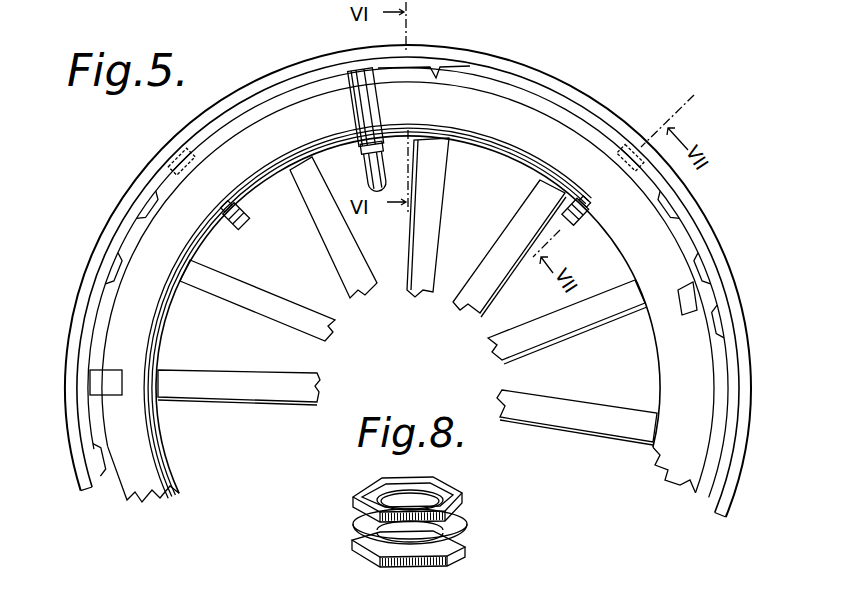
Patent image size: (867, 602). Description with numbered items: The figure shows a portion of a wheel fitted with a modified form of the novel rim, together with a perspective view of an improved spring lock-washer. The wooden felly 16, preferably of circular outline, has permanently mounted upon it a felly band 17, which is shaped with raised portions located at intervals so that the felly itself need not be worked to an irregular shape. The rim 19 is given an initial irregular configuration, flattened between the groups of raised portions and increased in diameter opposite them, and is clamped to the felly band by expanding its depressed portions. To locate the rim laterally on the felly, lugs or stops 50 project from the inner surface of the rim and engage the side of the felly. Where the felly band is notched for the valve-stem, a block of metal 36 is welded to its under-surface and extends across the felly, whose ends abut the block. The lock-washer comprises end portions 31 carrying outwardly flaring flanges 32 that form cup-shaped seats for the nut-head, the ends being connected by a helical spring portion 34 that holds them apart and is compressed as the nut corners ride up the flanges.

In FIG. 5, the rim 19 is at (70, 438).
In FIG. 5, the felly 16 is at (165, 369).
In FIG. 5, the felly band 17 is at (300, 305).
In FIG. 5, the block of metal 36 is at (348, 100).
In FIG. 5, the lugs or stops 50 is at (112, 390).
In FIG. 8, the end portions 31 is at (354, 507).
In FIG. 8, the flanges 32 is at (428, 486).
In FIG. 8, the spring portion 34 is at (467, 521).